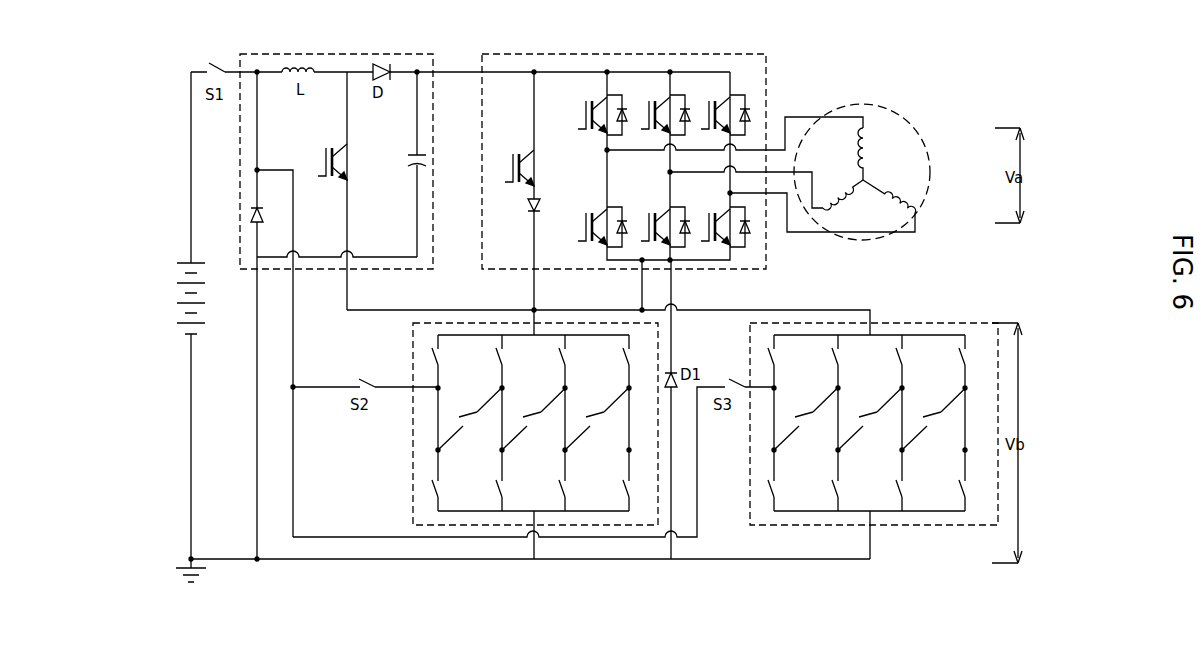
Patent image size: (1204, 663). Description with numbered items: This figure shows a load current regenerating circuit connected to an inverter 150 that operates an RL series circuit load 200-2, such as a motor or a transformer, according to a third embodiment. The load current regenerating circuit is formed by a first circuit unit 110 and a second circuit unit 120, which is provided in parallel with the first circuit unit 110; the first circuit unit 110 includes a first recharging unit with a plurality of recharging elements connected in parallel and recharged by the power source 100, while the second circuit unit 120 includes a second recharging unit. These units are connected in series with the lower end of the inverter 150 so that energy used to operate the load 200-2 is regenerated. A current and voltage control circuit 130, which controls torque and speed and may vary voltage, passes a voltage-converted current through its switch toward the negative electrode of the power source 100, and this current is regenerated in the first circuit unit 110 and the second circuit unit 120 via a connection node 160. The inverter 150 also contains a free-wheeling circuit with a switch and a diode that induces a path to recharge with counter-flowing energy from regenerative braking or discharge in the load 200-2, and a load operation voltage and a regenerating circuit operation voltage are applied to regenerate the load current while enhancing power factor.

The power source 100 is at (216, 270).
The first circuit unit 110 is at (412, 360).
The second circuit unit 120 is at (748, 361).
The current and voltage control circuit 130 is at (343, 54).
The inverter 150 is at (645, 54).
The connection node 160 is at (532, 309).
The RL load 200-2 is at (900, 109).